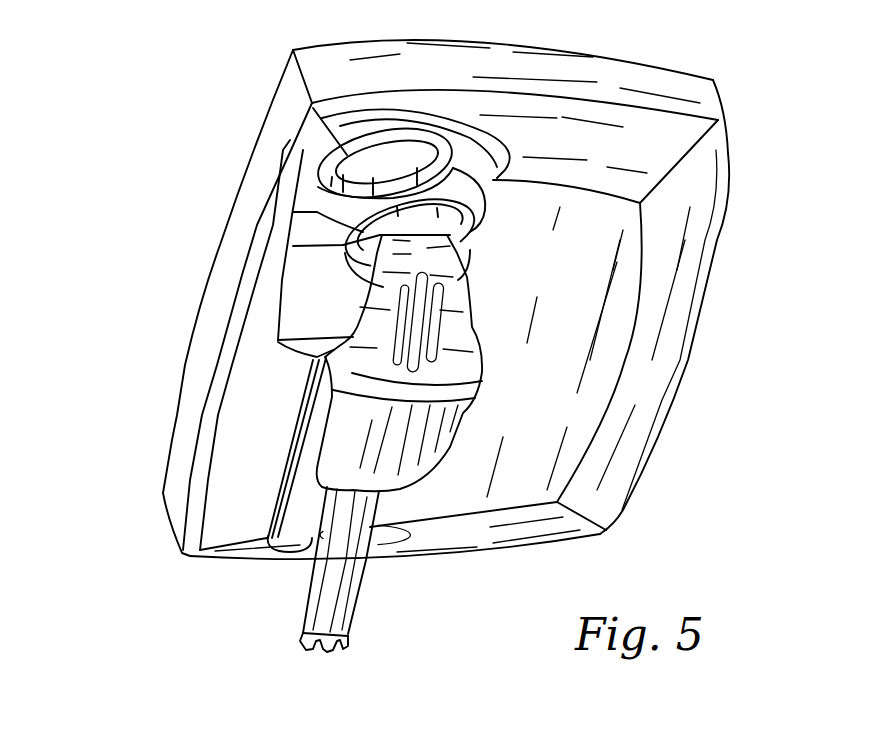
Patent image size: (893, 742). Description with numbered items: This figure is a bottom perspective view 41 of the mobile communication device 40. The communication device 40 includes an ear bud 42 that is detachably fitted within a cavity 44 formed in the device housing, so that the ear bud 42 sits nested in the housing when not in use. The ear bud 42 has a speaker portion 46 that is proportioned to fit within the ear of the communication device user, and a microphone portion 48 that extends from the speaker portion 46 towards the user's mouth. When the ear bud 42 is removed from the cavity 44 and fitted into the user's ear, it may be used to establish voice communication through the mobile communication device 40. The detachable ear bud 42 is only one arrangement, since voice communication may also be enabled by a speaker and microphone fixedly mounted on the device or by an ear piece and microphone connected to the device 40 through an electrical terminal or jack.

The mobile communication device 40 is at (677, 157).
The bottom perspective view 41 is at (118, 318).
The ear bud 42 is at (477, 382).
The cavity 44 is at (293, 212).
The speaker portion 46 is at (470, 246).
The microphone portion 48 is at (350, 648).